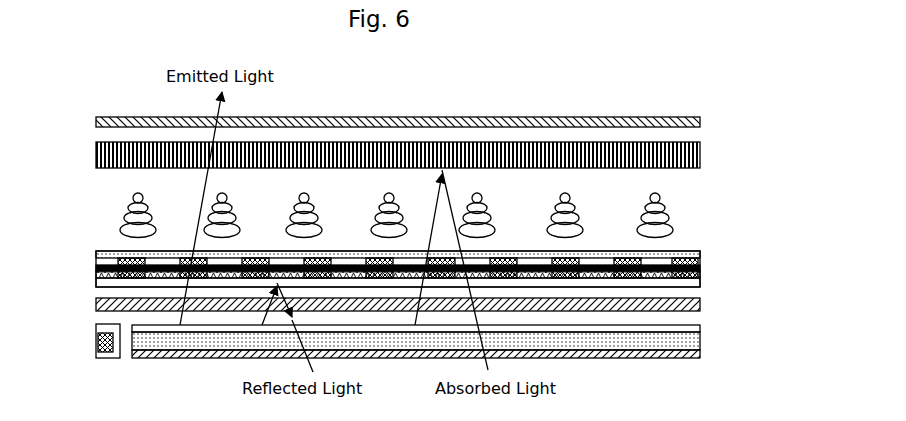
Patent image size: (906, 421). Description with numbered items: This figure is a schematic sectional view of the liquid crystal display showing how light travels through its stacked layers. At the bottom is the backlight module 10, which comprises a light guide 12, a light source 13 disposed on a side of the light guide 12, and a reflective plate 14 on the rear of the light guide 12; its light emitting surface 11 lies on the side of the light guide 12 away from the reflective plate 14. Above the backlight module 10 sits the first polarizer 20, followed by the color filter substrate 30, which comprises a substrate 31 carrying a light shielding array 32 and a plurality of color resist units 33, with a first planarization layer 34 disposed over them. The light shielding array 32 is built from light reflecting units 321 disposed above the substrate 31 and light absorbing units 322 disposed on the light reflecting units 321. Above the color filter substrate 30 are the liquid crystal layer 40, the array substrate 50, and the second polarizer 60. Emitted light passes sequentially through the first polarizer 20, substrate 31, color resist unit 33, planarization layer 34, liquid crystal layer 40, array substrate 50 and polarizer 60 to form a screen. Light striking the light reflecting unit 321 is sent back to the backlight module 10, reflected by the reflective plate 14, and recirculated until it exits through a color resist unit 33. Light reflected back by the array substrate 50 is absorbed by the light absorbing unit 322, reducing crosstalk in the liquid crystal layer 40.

The backlight module 10 is at (397, 360).
The light emitting surface 11 is at (702, 327).
The light guide 12 is at (700, 353).
The light source 13 is at (104, 360).
The reflective plate 14 is at (632, 353).
The first polarizer 20 is at (85, 304).
The color filter substrate 30 is at (417, 268).
The substrate 31 is at (702, 283).
The light shielding array 32 is at (447, 273).
The light reflecting unit 321 is at (702, 277).
The light absorbing unit 322 is at (702, 266).
The color resist unit 33 is at (677, 253).
The first planarization layer 34 is at (697, 261).
The liquid crystal layer 40 is at (85, 206).
The array substrate 50 is at (703, 158).
The second polarizer 60 is at (703, 123).